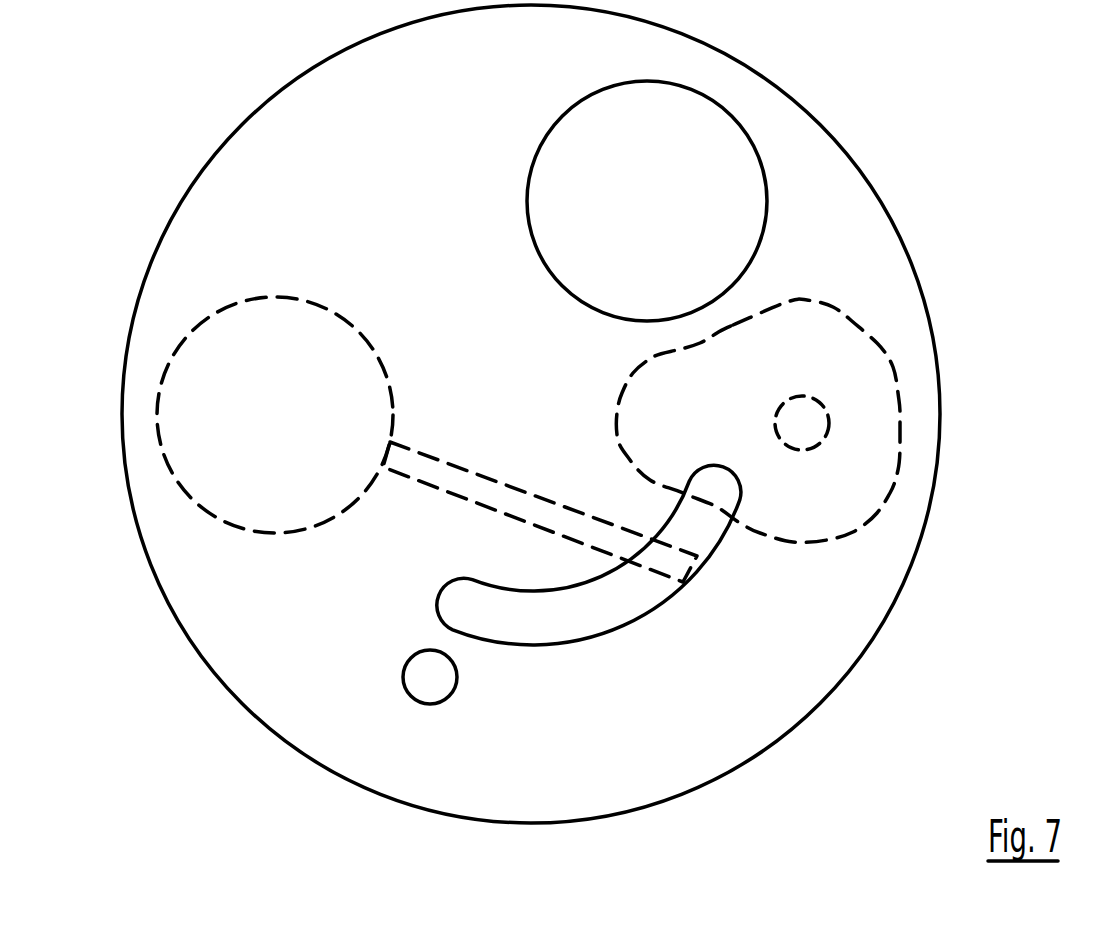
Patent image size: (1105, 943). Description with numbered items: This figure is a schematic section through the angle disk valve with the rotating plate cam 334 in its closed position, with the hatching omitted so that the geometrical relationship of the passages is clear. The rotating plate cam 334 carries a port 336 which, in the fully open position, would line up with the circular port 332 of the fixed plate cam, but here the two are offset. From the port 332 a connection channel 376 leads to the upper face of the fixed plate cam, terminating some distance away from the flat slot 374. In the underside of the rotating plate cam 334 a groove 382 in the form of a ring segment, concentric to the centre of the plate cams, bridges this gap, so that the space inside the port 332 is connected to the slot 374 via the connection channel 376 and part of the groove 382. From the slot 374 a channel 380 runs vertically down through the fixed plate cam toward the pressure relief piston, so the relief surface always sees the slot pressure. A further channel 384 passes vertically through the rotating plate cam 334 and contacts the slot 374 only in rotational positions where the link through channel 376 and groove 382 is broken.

The rotating plate cam 334 is at (316, 168).
The port 336 is at (713, 98).
The port 332 is at (160, 417).
The flat slot 374 is at (880, 338).
The channel 380 is at (807, 427).
The connection channel 376 is at (400, 474).
The groove 382 is at (620, 623).
The channel 384 is at (418, 693).